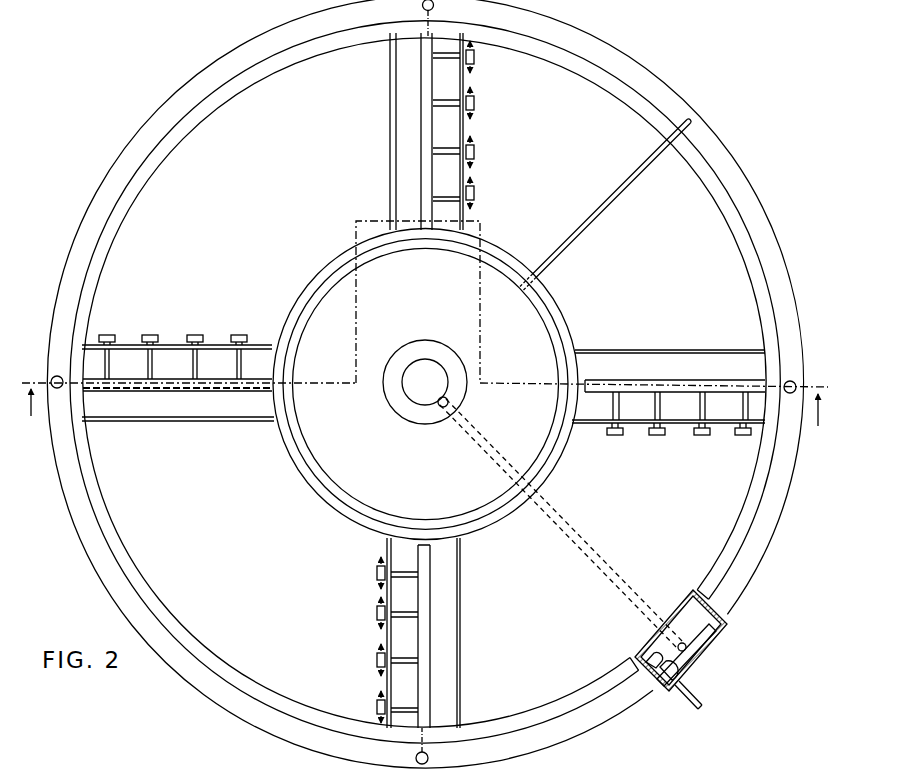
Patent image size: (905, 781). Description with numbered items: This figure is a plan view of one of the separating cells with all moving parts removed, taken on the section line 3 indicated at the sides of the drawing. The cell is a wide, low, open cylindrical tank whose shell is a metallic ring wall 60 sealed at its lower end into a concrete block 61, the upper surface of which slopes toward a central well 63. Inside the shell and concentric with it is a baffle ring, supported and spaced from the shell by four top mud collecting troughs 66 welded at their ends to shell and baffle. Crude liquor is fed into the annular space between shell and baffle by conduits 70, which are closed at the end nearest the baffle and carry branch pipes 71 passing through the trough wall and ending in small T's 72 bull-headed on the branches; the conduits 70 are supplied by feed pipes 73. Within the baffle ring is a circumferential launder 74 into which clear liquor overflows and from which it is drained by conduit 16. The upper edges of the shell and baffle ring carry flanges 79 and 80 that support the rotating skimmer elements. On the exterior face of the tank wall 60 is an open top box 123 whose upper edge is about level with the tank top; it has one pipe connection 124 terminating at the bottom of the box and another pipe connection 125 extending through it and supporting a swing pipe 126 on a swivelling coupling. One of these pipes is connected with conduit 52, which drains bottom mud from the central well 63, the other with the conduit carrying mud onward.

The section line 3- 3 is at (423, 416).
The conduit 16 is at (611, 192).
The conduit 52 is at (606, 574).
The ring wall 60 is at (692, 652).
The concrete block 61 is at (787, 287).
The central well 63 is at (436, 424).
The top mud collecting troughs 66 is at (158, 422).
The conduits 70 is at (168, 391).
The branch pipes 71 is at (152, 366).
The T's 72 is at (153, 335).
The feed pipes 73 is at (55, 376).
The circumferential launder 74 is at (300, 440).
The flange 79 is at (760, 466).
The flange 80 is at (553, 465).
The open top box 123 is at (727, 633).
The pipe connection 124 is at (662, 648).
The pipe connection 125 is at (688, 703).
The swing pipe 126 is at (702, 652).